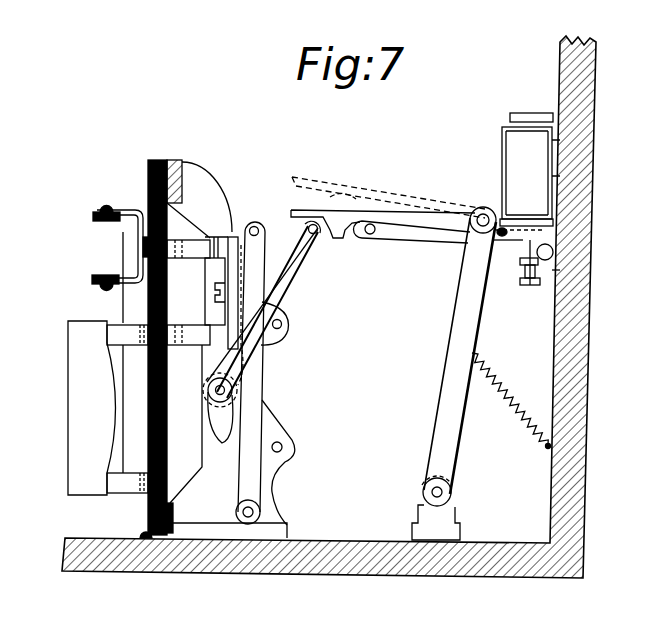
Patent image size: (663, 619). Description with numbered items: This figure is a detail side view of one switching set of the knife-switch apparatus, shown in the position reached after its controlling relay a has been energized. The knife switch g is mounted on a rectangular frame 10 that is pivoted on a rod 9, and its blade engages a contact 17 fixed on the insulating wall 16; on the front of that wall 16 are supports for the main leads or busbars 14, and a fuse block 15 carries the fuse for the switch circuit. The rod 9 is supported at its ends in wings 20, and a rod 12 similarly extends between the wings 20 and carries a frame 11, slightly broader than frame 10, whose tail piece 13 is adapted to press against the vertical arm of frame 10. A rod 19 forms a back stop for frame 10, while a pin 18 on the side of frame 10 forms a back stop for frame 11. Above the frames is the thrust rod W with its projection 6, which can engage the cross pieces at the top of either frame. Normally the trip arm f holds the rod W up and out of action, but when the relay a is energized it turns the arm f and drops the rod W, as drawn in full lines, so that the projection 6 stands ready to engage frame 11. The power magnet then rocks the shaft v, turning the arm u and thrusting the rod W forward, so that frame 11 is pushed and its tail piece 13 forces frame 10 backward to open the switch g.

The projection 6 is at (343, 234).
The trip arm f is at (392, 233).
The thrust rod W is at (370, 212).
The controlling relay a is at (522, 163).
The arm u is at (455, 360).
The shaft v is at (446, 492).
The knife switch g is at (229, 236).
The frame 11 is at (290, 276).
The pin 18 is at (283, 326).
The rod 12 is at (233, 390).
The tail piece 13 is at (225, 413).
The frame 10 is at (245, 427).
The rod 19 is at (284, 451).
The wing 20 is at (220, 488).
The rod 9 is at (260, 512).
The fuse block 15 is at (86, 380).
The busbar 14 is at (100, 274).
The insulating wall 16 is at (155, 180).
The contact 17 is at (205, 340).